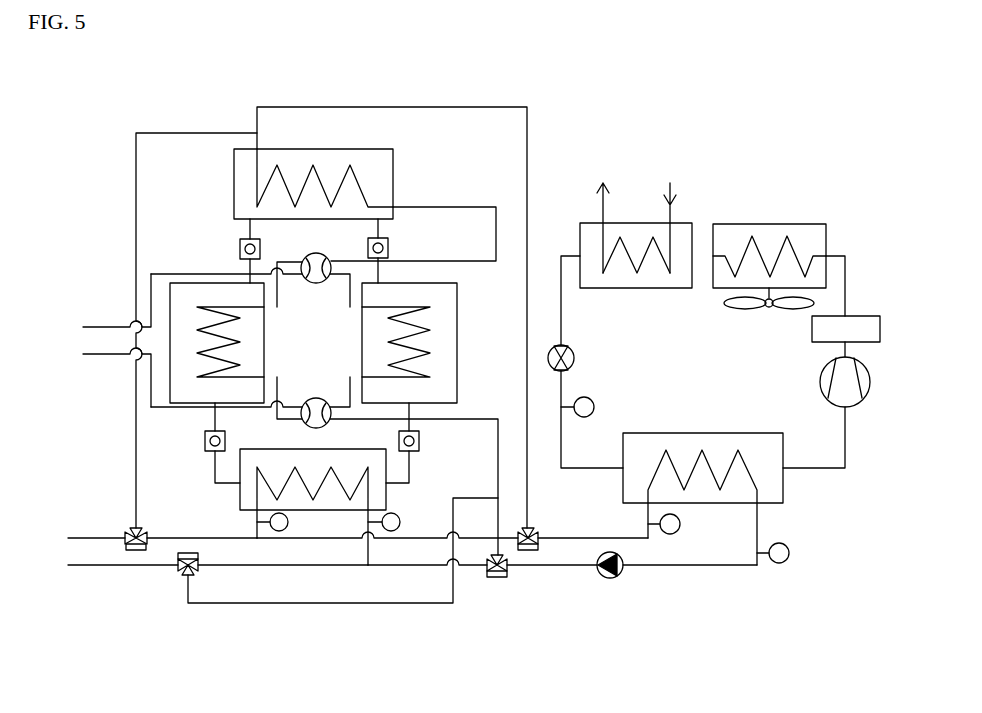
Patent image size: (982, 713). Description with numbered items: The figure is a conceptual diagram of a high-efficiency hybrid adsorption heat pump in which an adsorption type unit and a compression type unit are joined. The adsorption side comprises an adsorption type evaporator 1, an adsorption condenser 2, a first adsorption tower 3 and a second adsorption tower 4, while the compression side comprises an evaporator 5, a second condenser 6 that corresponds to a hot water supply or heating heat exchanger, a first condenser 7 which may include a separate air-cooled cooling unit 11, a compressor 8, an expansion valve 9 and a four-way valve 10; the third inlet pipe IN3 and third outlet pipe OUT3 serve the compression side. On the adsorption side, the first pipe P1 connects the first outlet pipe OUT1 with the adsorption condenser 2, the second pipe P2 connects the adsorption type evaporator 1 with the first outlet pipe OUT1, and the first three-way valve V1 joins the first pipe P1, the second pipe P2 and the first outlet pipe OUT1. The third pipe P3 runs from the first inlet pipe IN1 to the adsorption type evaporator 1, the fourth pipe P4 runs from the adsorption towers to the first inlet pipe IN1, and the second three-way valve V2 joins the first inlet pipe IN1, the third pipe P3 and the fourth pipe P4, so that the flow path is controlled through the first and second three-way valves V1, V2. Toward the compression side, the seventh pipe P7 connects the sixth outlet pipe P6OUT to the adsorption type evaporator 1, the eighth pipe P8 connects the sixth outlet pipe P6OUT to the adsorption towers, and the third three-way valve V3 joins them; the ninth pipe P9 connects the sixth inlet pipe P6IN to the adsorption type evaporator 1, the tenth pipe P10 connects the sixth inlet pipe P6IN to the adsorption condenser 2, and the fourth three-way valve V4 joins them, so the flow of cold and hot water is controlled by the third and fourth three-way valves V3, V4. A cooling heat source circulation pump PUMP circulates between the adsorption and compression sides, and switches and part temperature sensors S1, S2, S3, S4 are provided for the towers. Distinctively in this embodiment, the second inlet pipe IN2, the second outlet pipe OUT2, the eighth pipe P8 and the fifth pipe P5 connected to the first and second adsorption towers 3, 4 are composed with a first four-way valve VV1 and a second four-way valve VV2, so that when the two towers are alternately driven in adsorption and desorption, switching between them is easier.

The adsorption type evaporator 1 is at (308, 470).
The adsorption condenser 2 is at (324, 168).
The first adsorption tower 3 is at (178, 304).
The second adsorption tower 4 is at (371, 304).
The evaporator 5 is at (636, 456).
The second condenser 6 is at (631, 244).
The first condenser 7 is at (765, 244).
The compressor 8 is at (840, 391).
The expansion valve 9 is at (577, 357).
The four-way valve 10 is at (838, 338).
The air-cooled cooling unit 11 is at (837, 297).
The first pipe P1 is at (148, 127).
The second pipe P2 is at (216, 548).
The third pipe P3 is at (272, 570).
The fourth pipe P4 is at (201, 608).
The fifth pipe P5 is at (434, 205).
The seventh pipe P7 is at (398, 572).
The eighth pipe P8 is at (491, 475).
The ninth pipe P9 is at (344, 545).
The tenth pipe P10 is at (447, 101).
The sixth inlet pipe P6IN is at (637, 544).
The sixth outlet pipe P6OUT is at (719, 570).
The first switch / temperature sensor S1 is at (239, 443).
The second switch / temperature sensor S2 is at (421, 441).
The third switch / temperature sensor S3 is at (237, 246).
The fourth switch / temperature sensor S4 is at (393, 248).
The first three-way valve V1 is at (150, 529).
The second three-way valve V2 is at (178, 577).
The third three-way valve V3 is at (518, 573).
The fourth three-way valve V4 is at (543, 530).
The first four-way valve VV1 is at (314, 290).
The second four-way valve VV2 is at (318, 396).
The first outlet pipe OUT1 is at (88, 526).
The first inlet pipe IN1 is at (118, 584).
The second outlet pipe OUT2 is at (92, 304).
The second inlet pipe IN2 is at (102, 376).
The third inlet pipe IN3 is at (603, 214).
The third outlet pipe OUT3 is at (672, 214).
The cooling heat source circulation pump PUMP is at (610, 588).